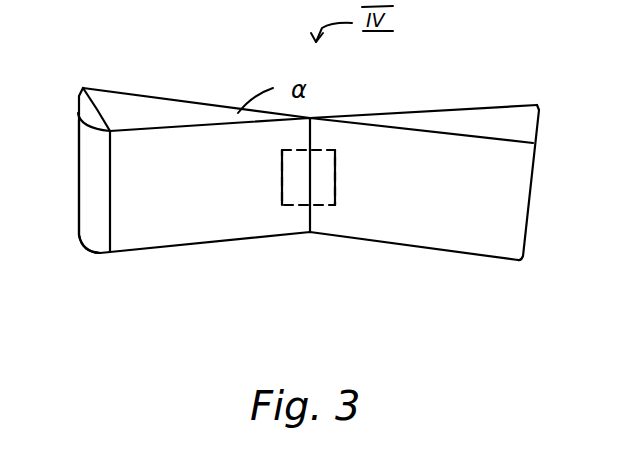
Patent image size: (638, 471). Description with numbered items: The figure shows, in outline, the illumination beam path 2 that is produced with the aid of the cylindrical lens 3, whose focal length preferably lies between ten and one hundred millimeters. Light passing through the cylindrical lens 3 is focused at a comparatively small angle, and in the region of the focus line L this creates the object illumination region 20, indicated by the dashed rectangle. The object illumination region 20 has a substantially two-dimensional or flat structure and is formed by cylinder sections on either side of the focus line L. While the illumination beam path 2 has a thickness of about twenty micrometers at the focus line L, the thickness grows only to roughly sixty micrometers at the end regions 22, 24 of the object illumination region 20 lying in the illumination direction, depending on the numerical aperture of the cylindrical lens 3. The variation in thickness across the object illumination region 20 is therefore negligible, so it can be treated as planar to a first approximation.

The illumination beam path 2 is at (170, 110).
The cylindrical lens 3 is at (90, 230).
The focus line L is at (308, 220).
The object illumination region 20 is at (340, 160).
The end region 22 is at (282, 193).
The end region 24 is at (338, 182).